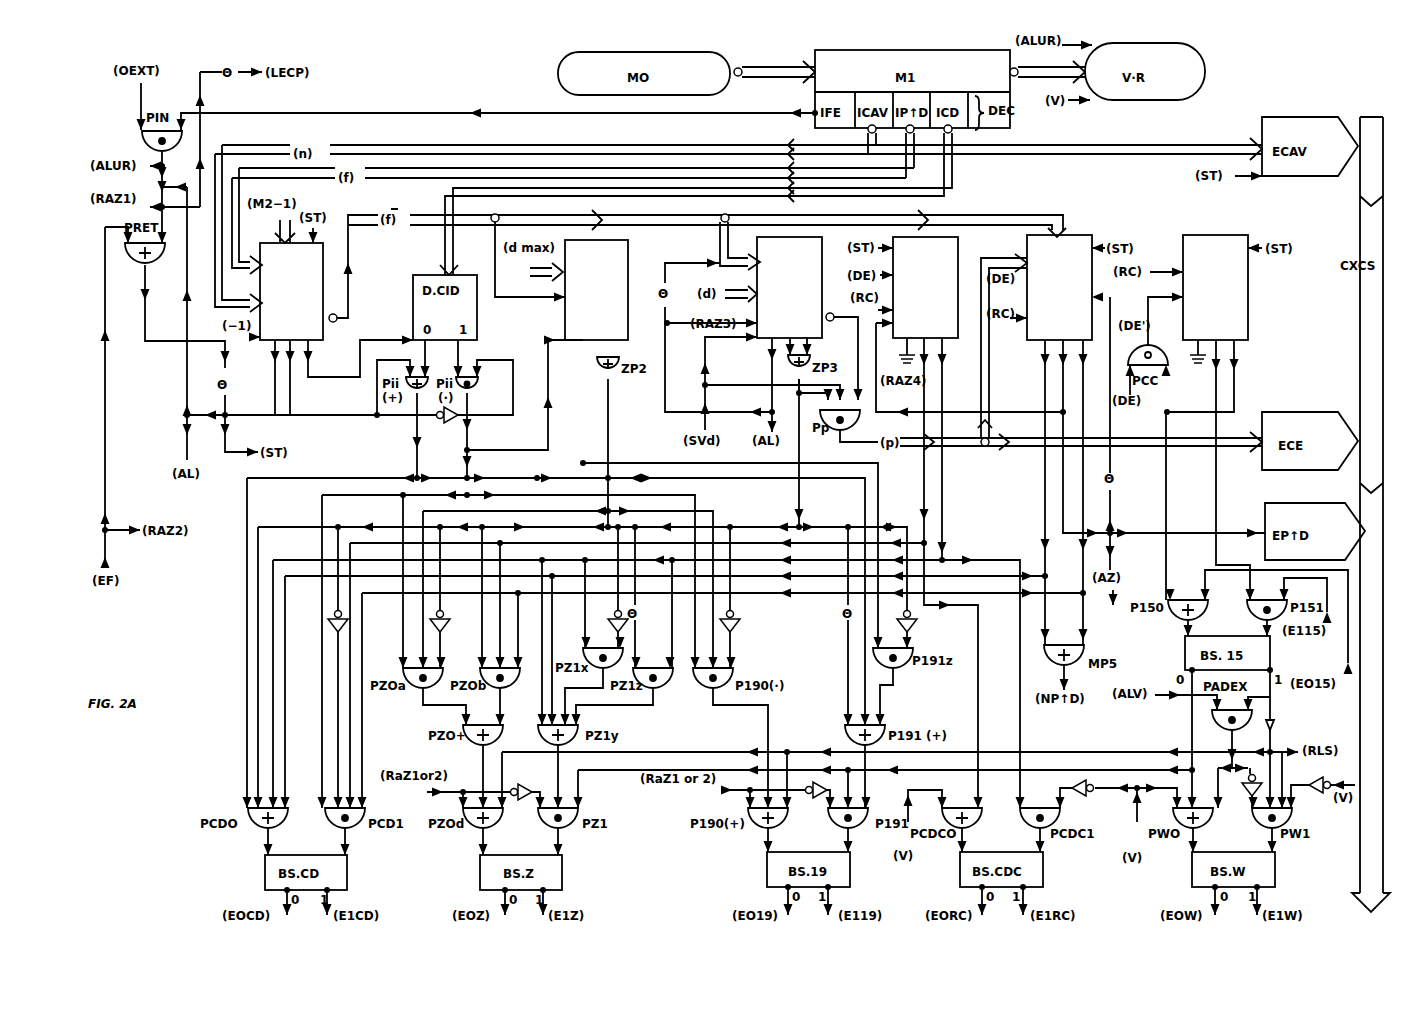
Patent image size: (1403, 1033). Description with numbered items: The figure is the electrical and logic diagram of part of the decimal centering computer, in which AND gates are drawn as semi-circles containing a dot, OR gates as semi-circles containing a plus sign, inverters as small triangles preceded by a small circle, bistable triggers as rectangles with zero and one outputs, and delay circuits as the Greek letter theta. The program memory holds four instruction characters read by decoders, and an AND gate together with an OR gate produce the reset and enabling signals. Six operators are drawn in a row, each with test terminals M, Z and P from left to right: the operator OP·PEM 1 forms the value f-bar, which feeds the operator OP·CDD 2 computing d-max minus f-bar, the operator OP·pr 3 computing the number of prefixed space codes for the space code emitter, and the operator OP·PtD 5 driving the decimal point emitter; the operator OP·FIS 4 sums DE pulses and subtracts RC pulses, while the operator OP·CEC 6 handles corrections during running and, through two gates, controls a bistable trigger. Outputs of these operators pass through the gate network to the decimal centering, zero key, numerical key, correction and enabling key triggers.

The operator OP·PEM 1 is at (291, 291).
The operator OP·CDD 2 is at (596, 290).
The operator OP·pr 3 is at (789, 287).
The operator OP·FIS 4 is at (925, 287).
The operator OP·PtD 5 is at (1059, 287).
The operator OP·CEC 6 is at (1215, 287).